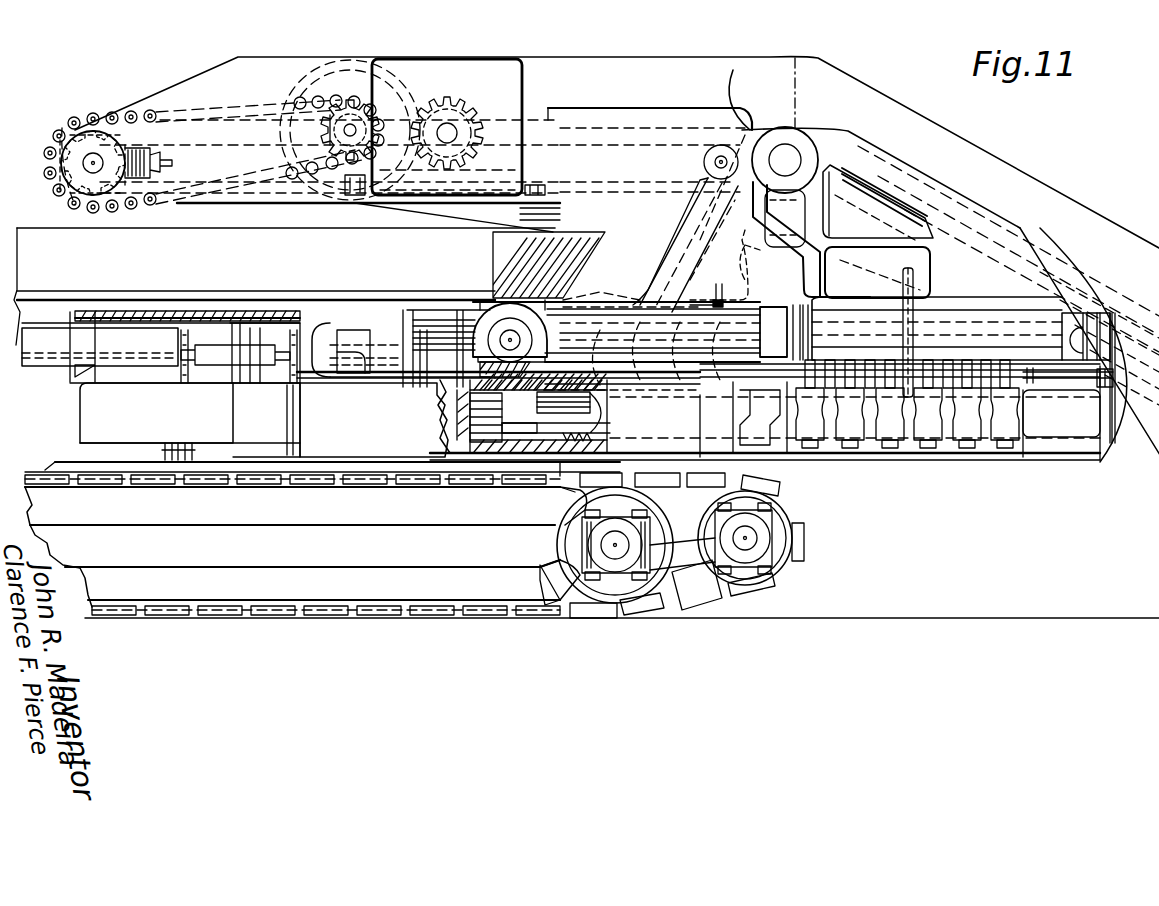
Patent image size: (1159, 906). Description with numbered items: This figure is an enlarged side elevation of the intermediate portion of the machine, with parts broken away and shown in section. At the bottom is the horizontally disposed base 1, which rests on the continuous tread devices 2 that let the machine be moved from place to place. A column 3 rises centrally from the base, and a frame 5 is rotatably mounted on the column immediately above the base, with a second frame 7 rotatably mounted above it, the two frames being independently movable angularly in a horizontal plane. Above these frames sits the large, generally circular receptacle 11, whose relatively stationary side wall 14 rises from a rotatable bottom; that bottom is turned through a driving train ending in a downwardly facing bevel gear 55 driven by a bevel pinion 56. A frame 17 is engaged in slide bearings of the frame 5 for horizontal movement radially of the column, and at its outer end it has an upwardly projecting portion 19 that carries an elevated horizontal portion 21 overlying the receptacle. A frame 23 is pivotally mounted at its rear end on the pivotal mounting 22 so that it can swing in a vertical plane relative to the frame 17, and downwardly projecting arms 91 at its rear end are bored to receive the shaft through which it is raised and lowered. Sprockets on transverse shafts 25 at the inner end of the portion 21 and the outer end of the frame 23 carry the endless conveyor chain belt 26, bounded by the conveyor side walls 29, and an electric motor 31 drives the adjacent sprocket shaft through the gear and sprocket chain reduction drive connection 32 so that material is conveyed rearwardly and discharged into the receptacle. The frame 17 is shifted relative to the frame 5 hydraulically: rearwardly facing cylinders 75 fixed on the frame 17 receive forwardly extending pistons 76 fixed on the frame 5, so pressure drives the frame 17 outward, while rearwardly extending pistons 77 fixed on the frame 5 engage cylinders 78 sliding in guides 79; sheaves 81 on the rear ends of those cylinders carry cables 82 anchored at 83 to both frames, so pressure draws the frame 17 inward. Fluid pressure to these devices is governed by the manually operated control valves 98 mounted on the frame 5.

The base 1 is at (519, 541).
The continuous tread devices 2 is at (423, 618).
The column 3 is at (284, 369).
The frame 5 is at (340, 420).
The second frame 7 is at (124, 336).
The receptacle 11 is at (246, 221).
The side wall 14 is at (342, 238).
The frame 17 is at (98, 426).
The upwardly projecting portion 19 is at (700, 211).
The elevated horizontal portion 21 is at (672, 120).
The pivotal mounting 22 is at (785, 160).
The frame 23 is at (917, 196).
The transverse shafts 25 is at (93, 160).
The endless conveyor chain belt 26 is at (196, 136).
The conveyor side walls 29 is at (915, 137).
The electric motor 31 is at (518, 88).
The gear and sprocket chain reduction drive connection 32 is at (395, 110).
The bevel gear 55 is at (262, 313).
The bevel pinion 56 is at (98, 306).
The cylinders 75 is at (598, 417).
The pistons 76 is at (525, 426).
The pistons 77 is at (998, 330).
The cylinders 78 is at (625, 302).
The guides 79 is at (632, 302).
The sheaves 81 is at (490, 313).
The cables 82 is at (566, 290).
The cable anchorage 83 is at (730, 297).
The downwardly projecting arms 91 is at (749, 262).
The control valves 98 is at (1026, 432).